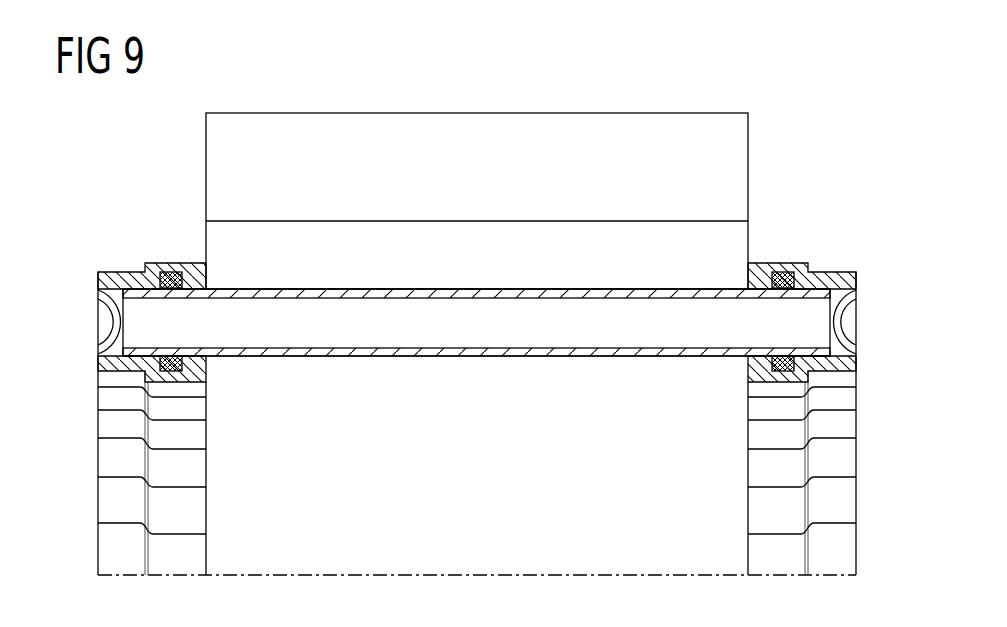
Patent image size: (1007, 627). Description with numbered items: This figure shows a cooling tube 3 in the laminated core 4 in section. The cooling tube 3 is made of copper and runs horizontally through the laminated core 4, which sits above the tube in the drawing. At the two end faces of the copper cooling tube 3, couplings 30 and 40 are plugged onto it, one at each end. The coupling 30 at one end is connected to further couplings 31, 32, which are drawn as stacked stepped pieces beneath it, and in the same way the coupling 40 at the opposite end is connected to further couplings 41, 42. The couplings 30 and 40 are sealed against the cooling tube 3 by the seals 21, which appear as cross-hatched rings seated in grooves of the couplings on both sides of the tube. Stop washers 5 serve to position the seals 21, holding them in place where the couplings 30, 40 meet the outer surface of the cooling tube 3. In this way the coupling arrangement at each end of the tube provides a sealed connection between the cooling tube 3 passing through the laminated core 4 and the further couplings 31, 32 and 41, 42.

The cooling tube 3 is at (522, 357).
The laminated core 4 is at (676, 135).
The stop washers 5 is at (208, 357).
The seals 21 is at (173, 268).
The coupling 30 is at (843, 357).
The further coupling 31 is at (842, 397).
The further coupling 32 is at (842, 425).
The coupling 40 is at (110, 357).
The further coupling 41 is at (110, 397).
The further coupling 42 is at (110, 425).